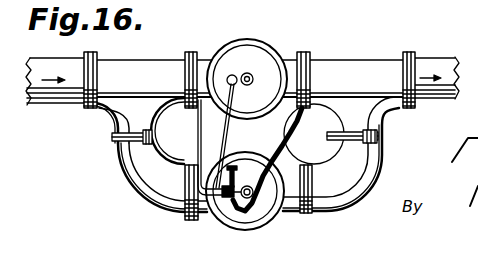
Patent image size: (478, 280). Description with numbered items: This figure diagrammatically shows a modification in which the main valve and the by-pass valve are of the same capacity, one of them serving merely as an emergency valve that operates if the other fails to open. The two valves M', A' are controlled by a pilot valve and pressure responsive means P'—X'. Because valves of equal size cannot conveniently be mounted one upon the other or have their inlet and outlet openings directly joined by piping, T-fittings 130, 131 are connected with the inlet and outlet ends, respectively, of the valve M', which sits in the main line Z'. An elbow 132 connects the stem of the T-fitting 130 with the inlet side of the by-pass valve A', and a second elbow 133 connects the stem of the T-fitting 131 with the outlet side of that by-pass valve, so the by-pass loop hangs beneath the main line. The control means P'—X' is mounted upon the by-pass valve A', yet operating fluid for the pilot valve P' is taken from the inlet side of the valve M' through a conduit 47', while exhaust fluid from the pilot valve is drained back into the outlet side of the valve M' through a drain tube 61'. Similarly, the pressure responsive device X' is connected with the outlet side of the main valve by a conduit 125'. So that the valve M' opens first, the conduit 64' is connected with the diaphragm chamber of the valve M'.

The main pipe Z' is at (242, 82).
The T-fitting 131 is at (358, 58).
The T-fitting 130 is at (117, 117).
The elbow 132 is at (121, 175).
The second elbow 133 is at (337, 211).
The conduit 47' is at (155, 131).
The conduit 125' is at (331, 134).
The valve M' is at (247, 70).
The by-pass valve A' is at (251, 200).
The pilot valve P' is at (234, 202).
The conduit 64' is at (219, 148).
The pressure responsive device X' is at (242, 136).
The drain tube 61' is at (278, 159).